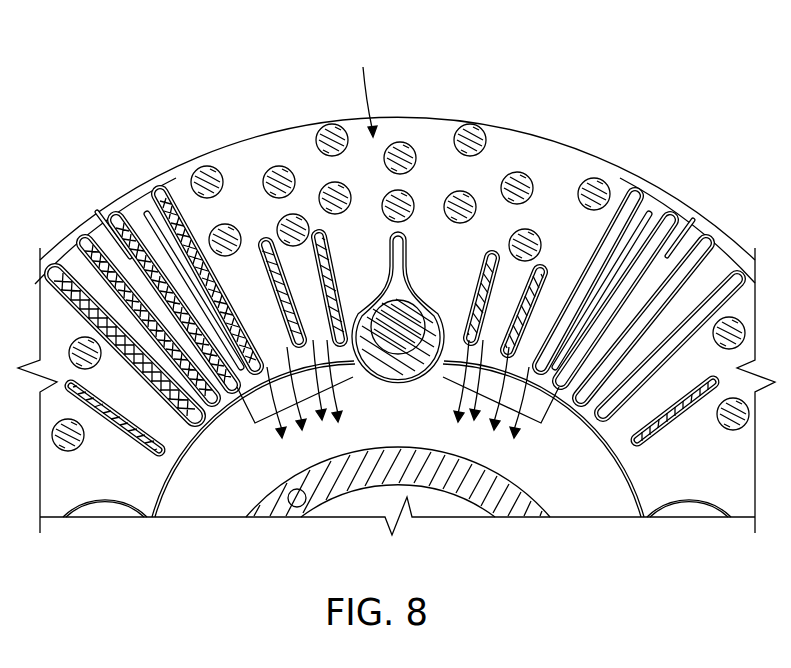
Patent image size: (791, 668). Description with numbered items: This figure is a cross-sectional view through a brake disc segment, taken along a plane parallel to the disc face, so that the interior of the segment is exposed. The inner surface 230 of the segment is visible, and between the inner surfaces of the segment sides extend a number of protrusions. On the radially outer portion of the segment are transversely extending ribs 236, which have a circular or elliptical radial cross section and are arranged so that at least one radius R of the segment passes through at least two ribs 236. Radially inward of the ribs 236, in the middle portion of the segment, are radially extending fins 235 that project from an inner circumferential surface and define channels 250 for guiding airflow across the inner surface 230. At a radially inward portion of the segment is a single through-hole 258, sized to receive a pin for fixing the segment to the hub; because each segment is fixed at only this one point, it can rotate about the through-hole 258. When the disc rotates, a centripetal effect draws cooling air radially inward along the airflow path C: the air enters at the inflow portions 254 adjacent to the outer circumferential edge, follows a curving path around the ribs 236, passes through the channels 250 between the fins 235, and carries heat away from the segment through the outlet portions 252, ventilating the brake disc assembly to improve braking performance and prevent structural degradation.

The inner surface 230 is at (292, 143).
The inflow portions 254 is at (221, 147).
The ribs 236 is at (488, 132).
The channels 250 is at (518, 268).
The fins 235 is at (473, 300).
The through-hole 258 is at (396, 386).
The outlet portions 252 is at (543, 410).
The airflow path of cooling air C is at (255, 166).
The radius R is at (397, 178).